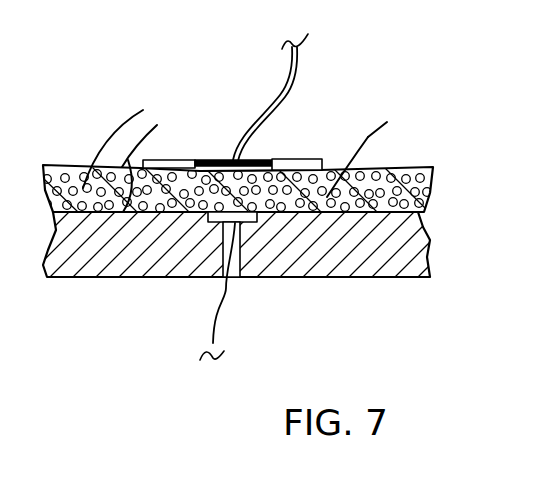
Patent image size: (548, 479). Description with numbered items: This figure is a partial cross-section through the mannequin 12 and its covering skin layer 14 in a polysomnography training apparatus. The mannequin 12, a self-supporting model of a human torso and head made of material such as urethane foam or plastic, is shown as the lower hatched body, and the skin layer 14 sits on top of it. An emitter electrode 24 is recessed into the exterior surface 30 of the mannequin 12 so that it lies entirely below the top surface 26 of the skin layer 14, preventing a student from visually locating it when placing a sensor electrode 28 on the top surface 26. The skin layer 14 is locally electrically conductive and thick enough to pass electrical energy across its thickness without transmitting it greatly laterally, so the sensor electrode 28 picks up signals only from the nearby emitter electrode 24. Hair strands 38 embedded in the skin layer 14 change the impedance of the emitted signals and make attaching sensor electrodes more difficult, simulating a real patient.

The mannequin 12 is at (427, 258).
The skin layer 14 is at (260, 182).
The emitter electrode 24 is at (218, 224).
The top surface 26 is at (408, 167).
The sensor electrode 28 is at (228, 160).
The exterior surface 30 is at (128, 160).
The hair strands 38 is at (368, 137).